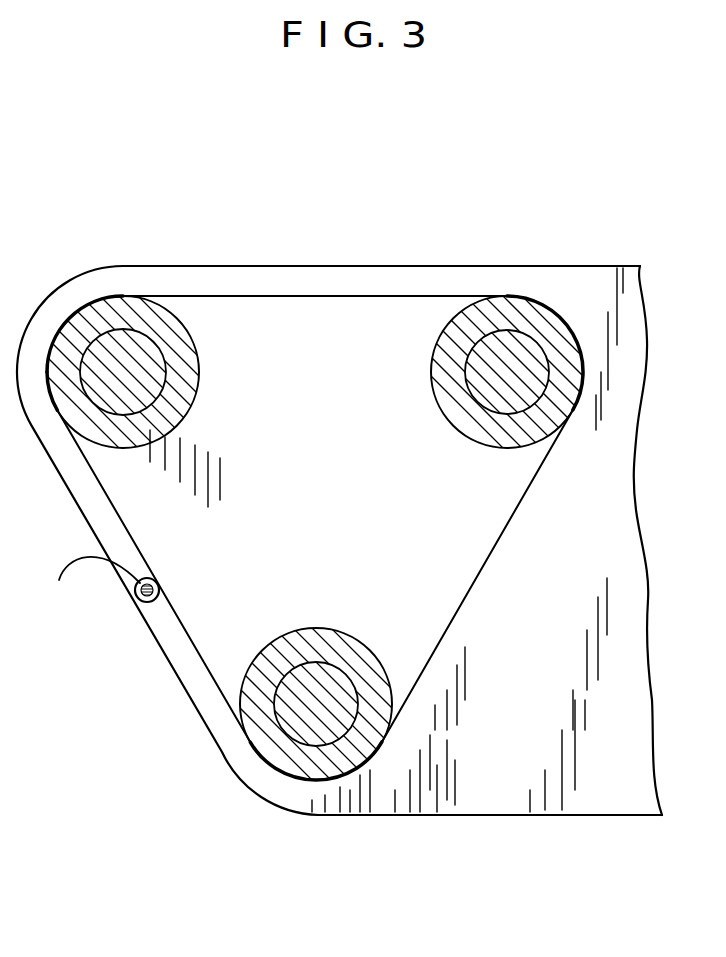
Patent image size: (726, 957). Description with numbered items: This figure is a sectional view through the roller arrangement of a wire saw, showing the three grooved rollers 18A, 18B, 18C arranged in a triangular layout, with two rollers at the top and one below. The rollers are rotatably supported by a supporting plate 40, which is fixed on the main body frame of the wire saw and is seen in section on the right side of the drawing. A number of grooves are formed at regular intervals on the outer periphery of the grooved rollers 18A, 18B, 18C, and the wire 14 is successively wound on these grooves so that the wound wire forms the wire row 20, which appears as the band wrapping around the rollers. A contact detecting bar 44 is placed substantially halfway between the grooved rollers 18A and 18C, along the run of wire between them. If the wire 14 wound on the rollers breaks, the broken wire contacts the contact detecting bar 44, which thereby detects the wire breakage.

The wire 14 is at (467, 595).
The grooved roller 18A is at (188, 408).
The grooved roller 18B is at (447, 408).
The grooved roller 18C is at (322, 630).
The wire row 20 is at (406, 290).
The supporting plate 40 is at (143, 266).
The contact detecting bar 44 is at (135, 601).